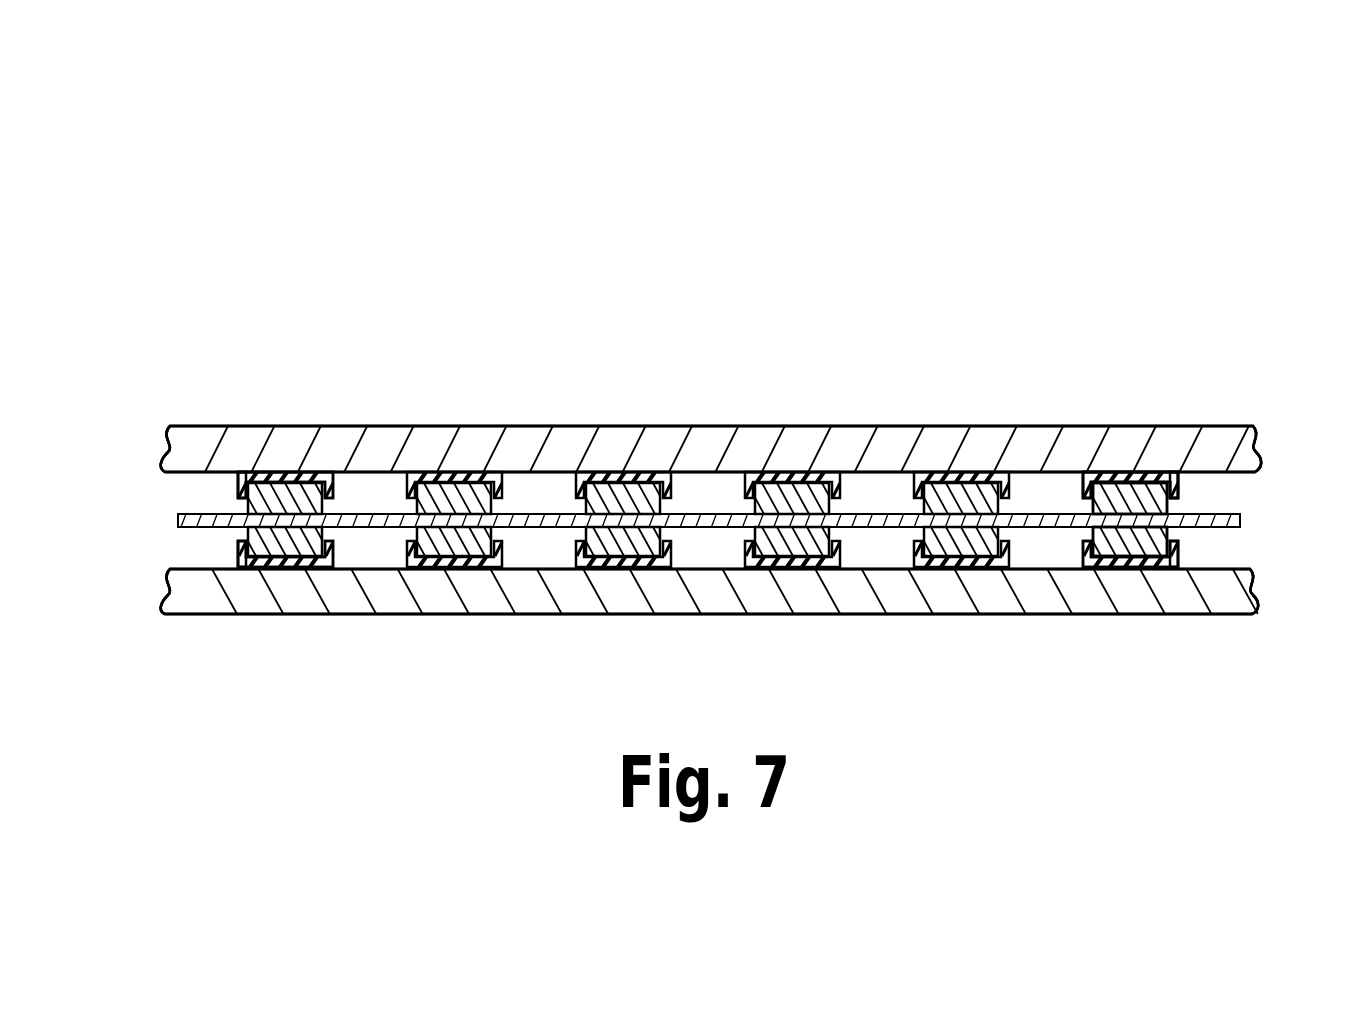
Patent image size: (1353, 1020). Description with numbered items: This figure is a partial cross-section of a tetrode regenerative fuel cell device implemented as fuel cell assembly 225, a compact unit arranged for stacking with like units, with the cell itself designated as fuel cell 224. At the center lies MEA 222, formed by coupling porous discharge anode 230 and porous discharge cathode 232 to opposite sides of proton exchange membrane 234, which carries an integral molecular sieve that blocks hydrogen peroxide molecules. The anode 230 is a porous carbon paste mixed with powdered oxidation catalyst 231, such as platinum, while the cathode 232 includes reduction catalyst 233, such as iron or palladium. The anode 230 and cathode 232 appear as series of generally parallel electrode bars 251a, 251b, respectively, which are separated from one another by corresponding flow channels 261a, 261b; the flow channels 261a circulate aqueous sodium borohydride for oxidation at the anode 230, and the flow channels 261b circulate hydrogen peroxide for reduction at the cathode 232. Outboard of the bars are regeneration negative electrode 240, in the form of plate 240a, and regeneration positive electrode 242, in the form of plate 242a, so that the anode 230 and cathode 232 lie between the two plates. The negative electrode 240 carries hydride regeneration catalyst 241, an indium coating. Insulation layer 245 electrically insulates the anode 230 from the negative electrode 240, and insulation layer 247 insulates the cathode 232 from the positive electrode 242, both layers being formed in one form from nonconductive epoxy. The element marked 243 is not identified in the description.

The MEA 222 is at (692, 508).
The fuel cell 224 is at (1117, 202).
The fuel cell assembly 225 is at (211, 200).
The porous discharge anode 230 is at (1128, 530).
The oxidation catalyst 231 is at (1143, 530).
The porous discharge cathode 232 is at (1148, 515).
The reduction catalyst 233 is at (1155, 490).
The proton exchange membrane 234 is at (549, 515).
The regeneration negative electrode 240 is at (360, 598).
The plate 240a is at (1139, 604).
The hydride regeneration catalyst 241 is at (521, 594).
The regeneration positive electrode 242 is at (358, 450).
The plate 242a is at (958, 445).
The upper plate inner surface 243 is at (753, 443).
The insulation layer 245 is at (238, 482).
The insulation layer 247 is at (240, 562).
The electrode bars 251a is at (243, 541).
The electrode bars 251b is at (243, 499).
The flow channels 261a is at (390, 569).
The flow channels 261b is at (390, 472).